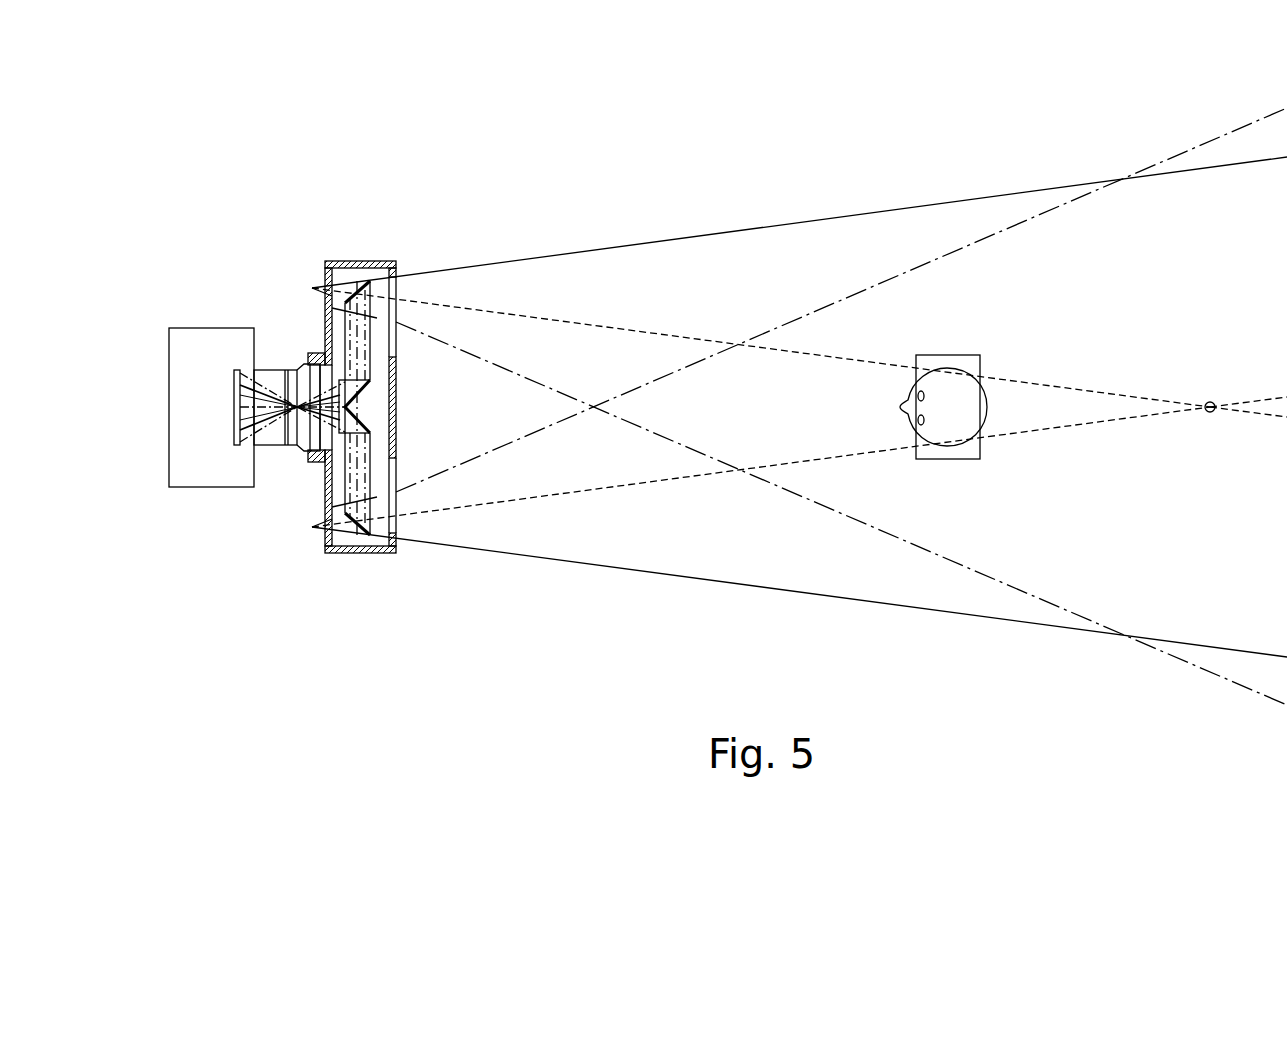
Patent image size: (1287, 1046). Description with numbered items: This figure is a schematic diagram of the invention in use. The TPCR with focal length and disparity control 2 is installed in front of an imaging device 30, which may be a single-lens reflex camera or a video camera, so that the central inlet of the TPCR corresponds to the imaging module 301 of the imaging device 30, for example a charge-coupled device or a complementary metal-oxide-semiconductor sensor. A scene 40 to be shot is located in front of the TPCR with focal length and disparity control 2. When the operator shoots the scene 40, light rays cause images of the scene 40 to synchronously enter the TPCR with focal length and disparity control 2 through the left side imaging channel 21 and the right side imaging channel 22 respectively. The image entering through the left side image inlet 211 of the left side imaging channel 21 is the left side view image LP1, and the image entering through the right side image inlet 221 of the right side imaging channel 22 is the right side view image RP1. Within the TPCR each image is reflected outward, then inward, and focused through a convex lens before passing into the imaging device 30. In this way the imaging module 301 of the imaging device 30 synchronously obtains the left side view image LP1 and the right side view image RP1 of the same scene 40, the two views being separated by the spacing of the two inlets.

The TPCR with focal length and disparity control 2 is at (360, 553).
The left side imaging channel 21 is at (391, 308).
The left side image inlet 211 is at (397, 288).
The right side imaging channel 22 is at (391, 501).
The right side image inlet 221 is at (397, 530).
The imaging device 30 is at (212, 327).
The imaging module 301 is at (236, 437).
The scene 40 is at (949, 395).
The left side view image LP1 is at (822, 353).
The right side view image RP1 is at (868, 453).